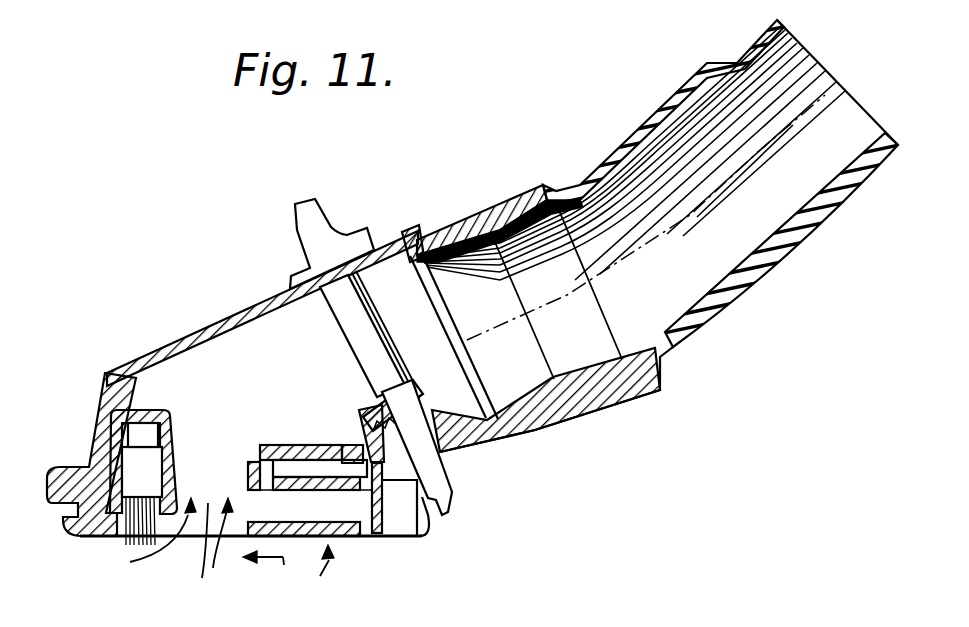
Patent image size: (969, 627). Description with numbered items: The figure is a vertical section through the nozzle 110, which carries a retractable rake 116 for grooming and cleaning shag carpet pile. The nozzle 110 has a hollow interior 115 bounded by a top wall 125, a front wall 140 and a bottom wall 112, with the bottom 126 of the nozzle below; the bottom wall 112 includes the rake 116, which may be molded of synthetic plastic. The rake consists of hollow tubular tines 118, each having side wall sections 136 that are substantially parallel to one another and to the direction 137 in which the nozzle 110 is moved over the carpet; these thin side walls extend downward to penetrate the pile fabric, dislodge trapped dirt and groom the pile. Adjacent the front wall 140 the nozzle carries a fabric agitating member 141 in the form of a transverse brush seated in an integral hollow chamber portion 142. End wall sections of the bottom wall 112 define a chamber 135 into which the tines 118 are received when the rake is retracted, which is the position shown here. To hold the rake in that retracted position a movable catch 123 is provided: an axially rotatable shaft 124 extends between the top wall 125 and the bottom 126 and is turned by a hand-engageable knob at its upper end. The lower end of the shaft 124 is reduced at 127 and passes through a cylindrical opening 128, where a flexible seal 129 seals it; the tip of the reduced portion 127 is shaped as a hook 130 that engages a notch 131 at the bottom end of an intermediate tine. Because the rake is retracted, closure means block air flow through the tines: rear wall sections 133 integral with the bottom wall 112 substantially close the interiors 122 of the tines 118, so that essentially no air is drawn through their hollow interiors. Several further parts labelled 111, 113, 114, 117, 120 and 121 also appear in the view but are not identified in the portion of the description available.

The nozzle 110 is at (216, 322).
The wall portion 111 is at (150, 354).
The bottom wall 112 is at (337, 452).
The air flow path 113 is at (184, 555).
The air flow arrows 114 is at (191, 545).
The hollow interior 115 is at (250, 367).
The rake 116 is at (323, 573).
The support post 117 is at (247, 475).
The tines 118 is at (356, 538).
The base 120 is at (373, 538).
The top plate 121 is at (258, 447).
The interiors of tines 122 is at (291, 514).
The catch means 123 is at (407, 288).
The axially rotatable shaft 124 is at (320, 208).
The top wall 125 is at (255, 297).
The bottom of the nozzle 126 is at (463, 457).
The reduced portion of shaft 127 is at (478, 410).
The cylindrical opening 128 is at (446, 366).
The flexible seal 129 is at (350, 440).
The hook 130 is at (435, 498).
The notch 131 is at (430, 530).
The rear wall sections 133 is at (369, 496).
The chamber 135 is at (310, 468).
The side wall sections 136 is at (403, 528).
The direction of movement 137 is at (275, 569).
The front wall 140 is at (92, 425).
The fabric agitating member 141 is at (141, 410).
The hollow chamber portion 142 is at (177, 456).